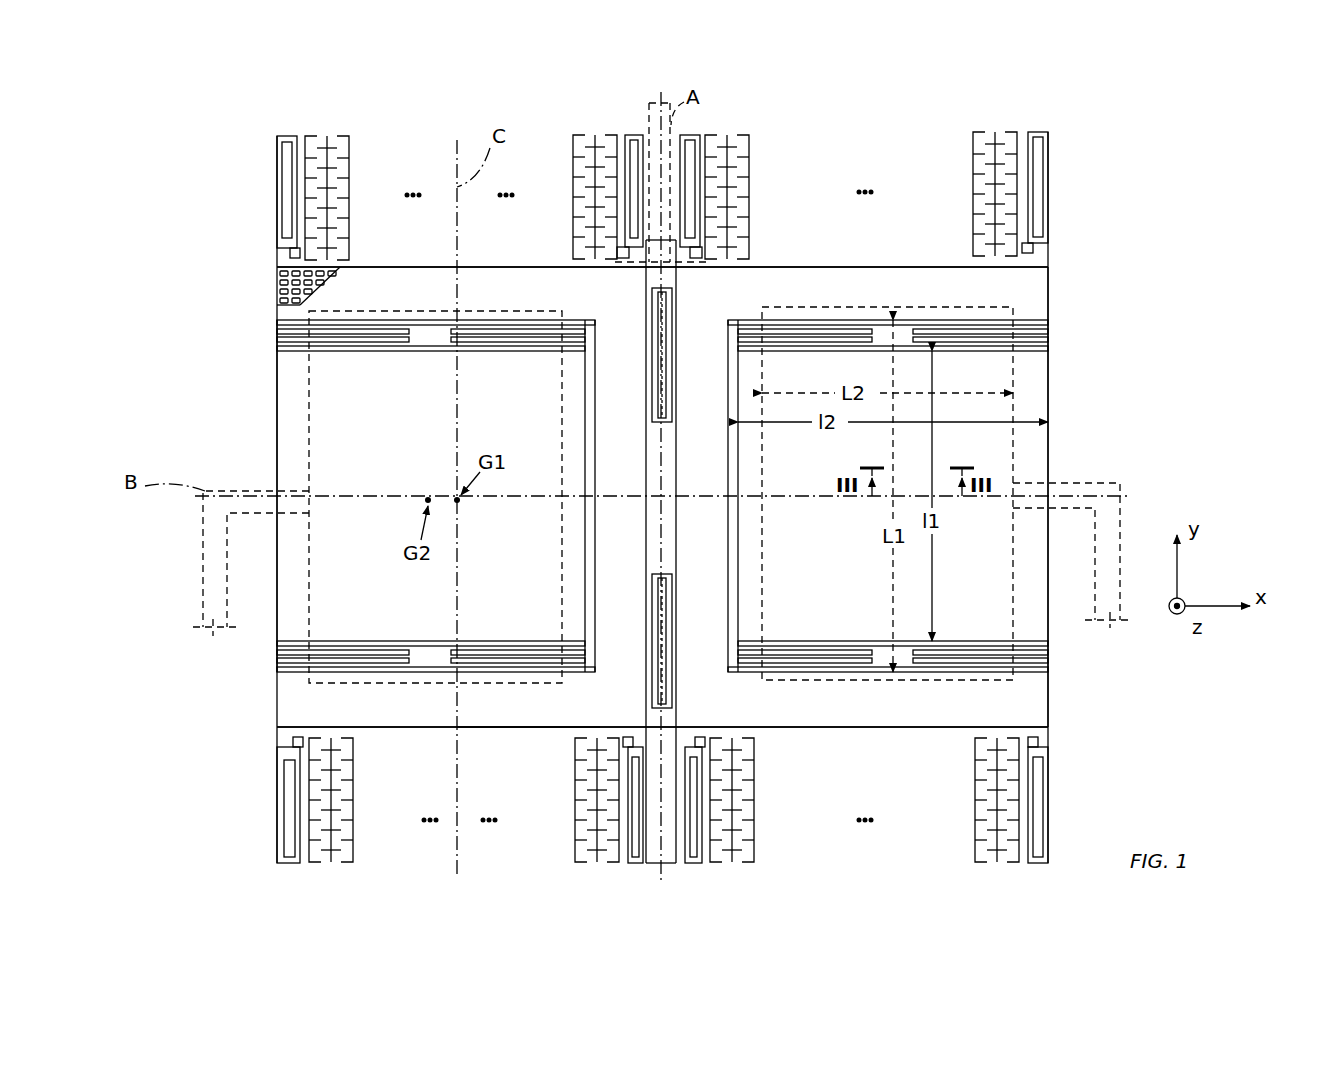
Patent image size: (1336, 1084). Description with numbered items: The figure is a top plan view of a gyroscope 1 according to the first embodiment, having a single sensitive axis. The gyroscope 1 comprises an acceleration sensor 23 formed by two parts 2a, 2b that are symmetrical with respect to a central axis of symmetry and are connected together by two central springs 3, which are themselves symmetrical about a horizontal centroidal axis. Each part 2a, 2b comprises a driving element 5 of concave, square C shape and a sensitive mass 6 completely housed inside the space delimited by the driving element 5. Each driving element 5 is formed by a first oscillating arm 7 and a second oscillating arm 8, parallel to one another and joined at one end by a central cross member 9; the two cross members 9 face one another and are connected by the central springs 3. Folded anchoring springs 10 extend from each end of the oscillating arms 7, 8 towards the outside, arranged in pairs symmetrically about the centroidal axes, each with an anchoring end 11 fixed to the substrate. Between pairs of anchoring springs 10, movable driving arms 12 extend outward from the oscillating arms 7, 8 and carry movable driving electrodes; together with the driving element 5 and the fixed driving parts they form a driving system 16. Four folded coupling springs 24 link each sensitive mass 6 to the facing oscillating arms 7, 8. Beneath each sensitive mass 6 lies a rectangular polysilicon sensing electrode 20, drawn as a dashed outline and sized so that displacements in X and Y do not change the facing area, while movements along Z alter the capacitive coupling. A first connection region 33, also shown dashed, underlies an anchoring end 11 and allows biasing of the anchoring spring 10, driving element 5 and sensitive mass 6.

The gyroscope 1 is at (730, 497).
The first part 2a is at (379, 577).
The second part 2b is at (973, 518).
The central springs 3 is at (673, 330).
The driving element 5 is at (421, 729).
The sensitive mass 6 is at (436, 496).
The first oscillating arm 7 is at (420, 273).
The second oscillating arm 8 is at (540, 730).
The central cross member 9 is at (600, 432).
The anchoring springs 10 is at (277, 169).
The anchoring end 11 is at (290, 253).
The movable driving arms 12 is at (337, 124).
The driving system 16 is at (527, 770).
The sensing electrode 20 is at (330, 453).
The acceleration sensor 23 is at (1072, 360).
The coupling springs 24 is at (378, 336).
The first connection region 33 is at (656, 104).